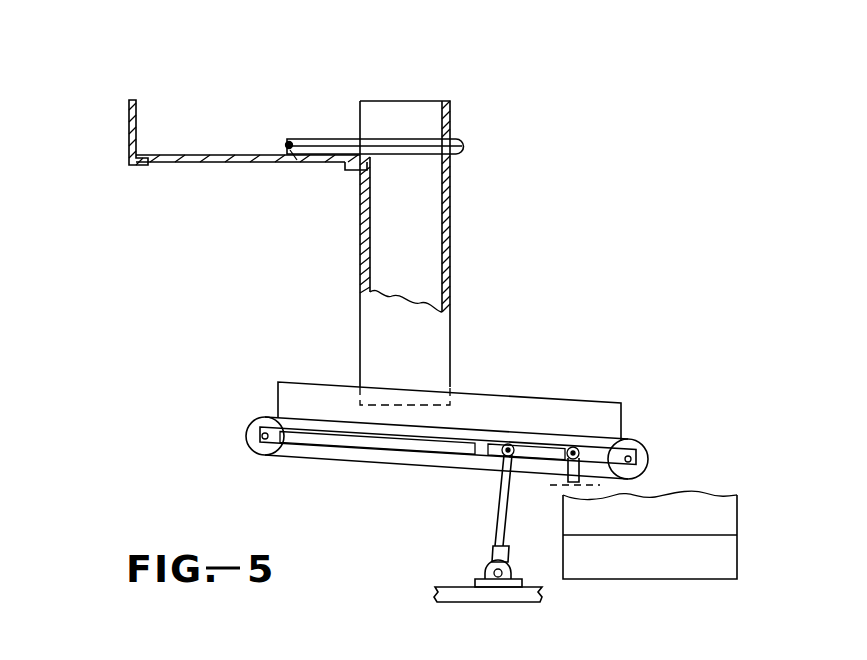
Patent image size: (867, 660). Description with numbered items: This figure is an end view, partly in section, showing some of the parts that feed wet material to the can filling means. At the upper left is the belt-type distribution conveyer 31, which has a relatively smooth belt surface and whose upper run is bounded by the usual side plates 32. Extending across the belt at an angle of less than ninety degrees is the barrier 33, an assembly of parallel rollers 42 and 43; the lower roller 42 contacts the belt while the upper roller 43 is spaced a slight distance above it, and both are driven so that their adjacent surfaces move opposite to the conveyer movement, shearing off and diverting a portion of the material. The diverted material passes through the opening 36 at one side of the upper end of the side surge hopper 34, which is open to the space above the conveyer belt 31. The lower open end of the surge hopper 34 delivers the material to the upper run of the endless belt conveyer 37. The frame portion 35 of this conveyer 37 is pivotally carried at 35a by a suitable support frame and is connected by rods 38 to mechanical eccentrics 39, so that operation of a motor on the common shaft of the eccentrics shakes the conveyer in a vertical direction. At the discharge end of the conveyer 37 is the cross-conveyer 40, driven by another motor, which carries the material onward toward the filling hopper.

The distribution conveyer 31 is at (205, 155).
The side plates 32 is at (129, 122).
The barrier 33 is at (322, 96).
The side surge hopper 34 is at (450, 211).
The frame portion 35 is at (345, 443).
The pivot 35a is at (582, 448).
The open side of hopper 36 is at (363, 138).
The endless belt conveyer 37 is at (612, 448).
The rods 38 is at (502, 494).
The mechanical eccentrics 39 is at (485, 568).
The cross-conveyer 40 is at (713, 570).
The lower roller 42 is at (297, 160).
The upper roller 43 is at (290, 142).